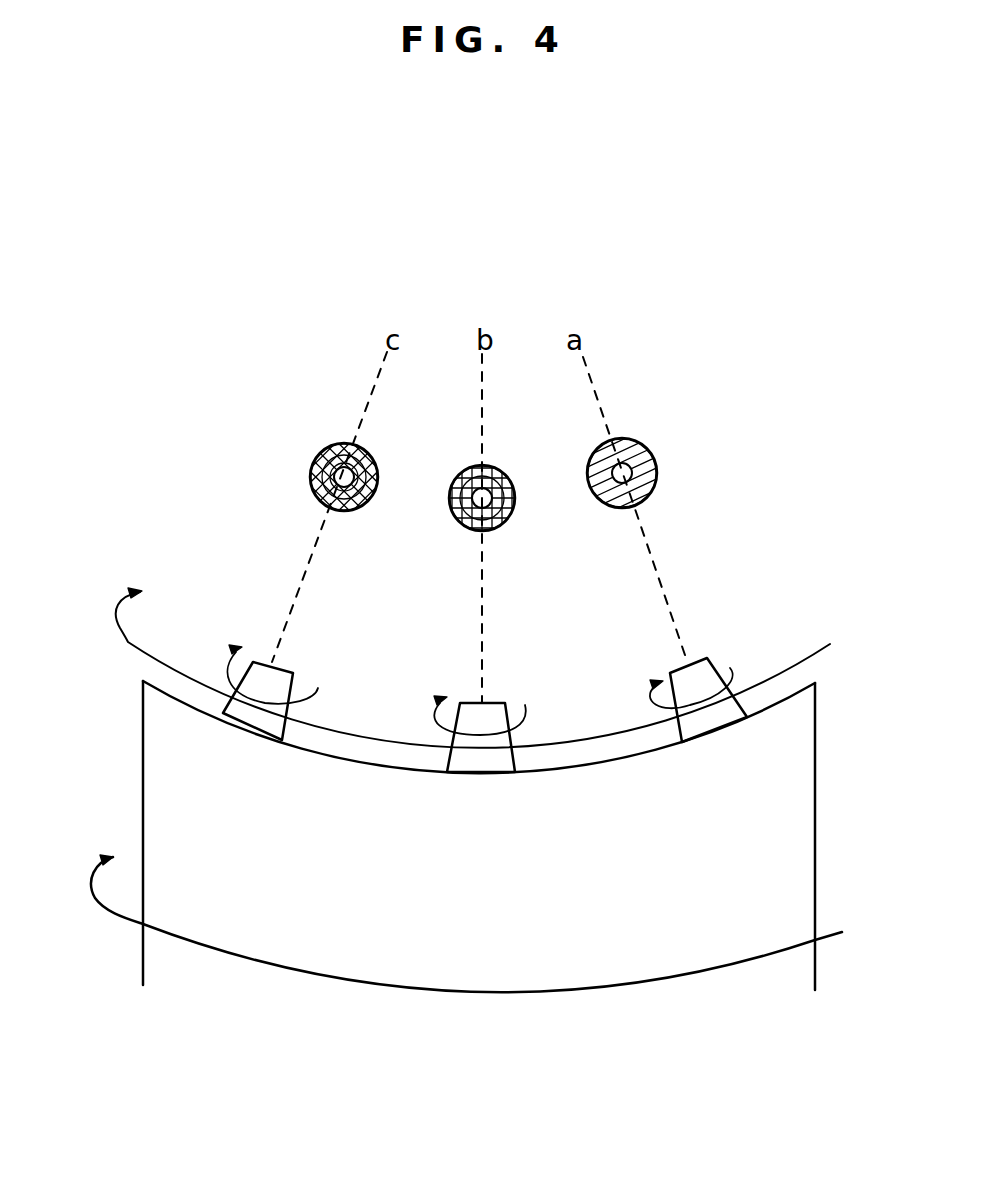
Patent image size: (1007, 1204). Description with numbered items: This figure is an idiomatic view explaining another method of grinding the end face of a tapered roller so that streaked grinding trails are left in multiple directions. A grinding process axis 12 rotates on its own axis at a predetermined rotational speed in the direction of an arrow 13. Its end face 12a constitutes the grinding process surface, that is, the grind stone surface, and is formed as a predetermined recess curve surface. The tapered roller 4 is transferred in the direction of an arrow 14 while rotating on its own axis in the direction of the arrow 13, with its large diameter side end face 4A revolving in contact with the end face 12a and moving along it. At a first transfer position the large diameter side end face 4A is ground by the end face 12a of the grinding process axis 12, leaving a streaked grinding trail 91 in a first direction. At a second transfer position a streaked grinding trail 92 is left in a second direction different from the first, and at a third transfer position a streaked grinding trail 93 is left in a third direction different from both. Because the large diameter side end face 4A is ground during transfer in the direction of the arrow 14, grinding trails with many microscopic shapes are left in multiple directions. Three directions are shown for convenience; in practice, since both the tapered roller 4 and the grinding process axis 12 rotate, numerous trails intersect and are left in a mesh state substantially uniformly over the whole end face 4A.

The tapered roller 4 is at (262, 662).
The large diameter side end face 4A is at (318, 455).
The streaked grinding trail 91 is at (375, 483).
The streaked grinding trail 92 is at (365, 451).
The streaked grinding trail 93 is at (343, 443).
The grinding process axis 12 is at (800, 842).
The end face 12a is at (613, 762).
The arrow 13 is at (238, 649).
The arrow 14 is at (126, 644).